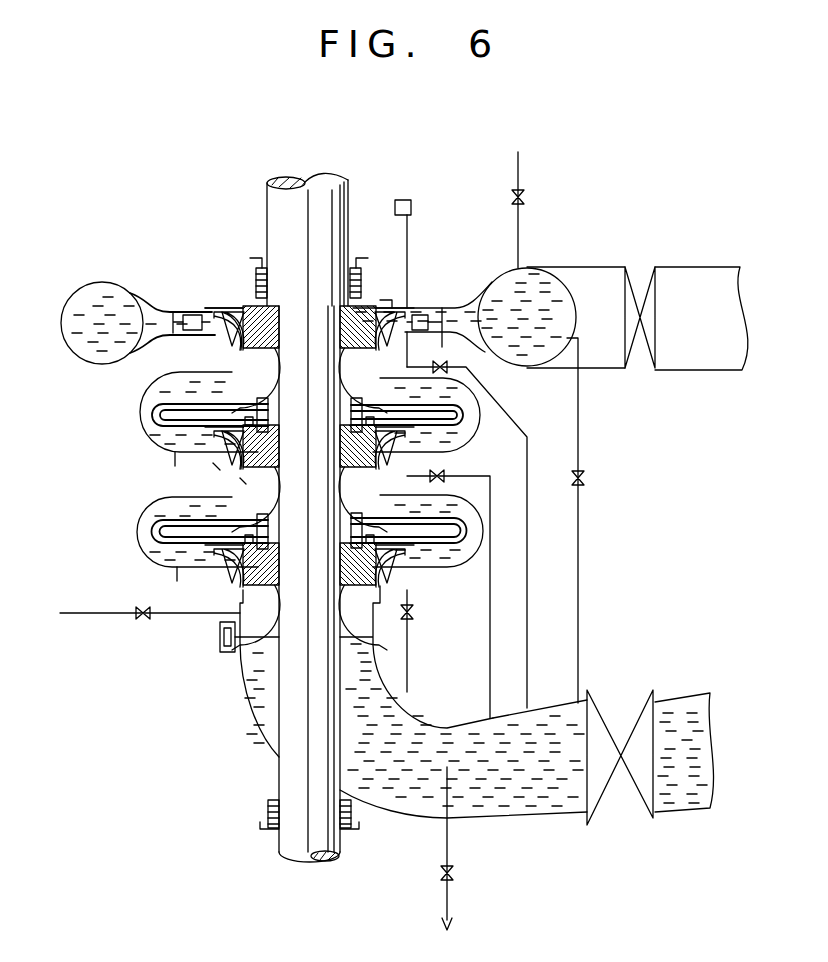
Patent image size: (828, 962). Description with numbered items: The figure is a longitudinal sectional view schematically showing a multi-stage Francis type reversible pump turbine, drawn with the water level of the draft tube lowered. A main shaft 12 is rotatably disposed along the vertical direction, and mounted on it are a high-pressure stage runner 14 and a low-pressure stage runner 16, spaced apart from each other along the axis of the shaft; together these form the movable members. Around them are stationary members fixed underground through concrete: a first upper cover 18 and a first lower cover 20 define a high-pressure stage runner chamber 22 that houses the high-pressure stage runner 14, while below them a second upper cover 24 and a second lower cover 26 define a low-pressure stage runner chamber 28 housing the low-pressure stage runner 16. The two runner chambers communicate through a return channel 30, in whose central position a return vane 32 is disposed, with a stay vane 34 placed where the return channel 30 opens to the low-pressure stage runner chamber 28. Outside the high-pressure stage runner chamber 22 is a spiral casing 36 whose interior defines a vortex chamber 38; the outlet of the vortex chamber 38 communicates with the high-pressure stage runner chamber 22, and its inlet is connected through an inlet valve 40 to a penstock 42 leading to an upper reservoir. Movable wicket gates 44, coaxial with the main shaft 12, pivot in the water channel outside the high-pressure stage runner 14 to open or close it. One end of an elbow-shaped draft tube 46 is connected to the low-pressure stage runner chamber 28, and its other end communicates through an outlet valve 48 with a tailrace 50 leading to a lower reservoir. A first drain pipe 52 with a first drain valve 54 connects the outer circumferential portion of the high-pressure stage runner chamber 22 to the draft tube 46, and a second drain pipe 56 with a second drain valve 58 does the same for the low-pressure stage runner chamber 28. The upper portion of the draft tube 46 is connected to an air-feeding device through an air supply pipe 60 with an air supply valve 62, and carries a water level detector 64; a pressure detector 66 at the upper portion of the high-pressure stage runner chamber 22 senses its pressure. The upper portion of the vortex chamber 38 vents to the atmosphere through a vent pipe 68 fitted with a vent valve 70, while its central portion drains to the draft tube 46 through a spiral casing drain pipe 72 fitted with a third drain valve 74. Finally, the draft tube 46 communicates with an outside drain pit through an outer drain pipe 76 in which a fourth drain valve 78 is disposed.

The main shaft 12 is at (343, 207).
The high-pressure stage runner 14 is at (390, 311).
The low-pressure stage runner 16 is at (226, 462).
The first upper cover 18 is at (218, 306).
The first lower cover 20 is at (212, 340).
The high-pressure stage runner chamber 22 is at (238, 348).
The second upper cover 24 is at (262, 418).
The second lower cover 26 is at (213, 464).
The low-pressure stage runner chamber 28 is at (243, 483).
The return channel 30 is at (156, 383).
The return vane 32 is at (143, 417).
The stay vane 34 is at (172, 456).
The spiral casing 36 is at (576, 303).
The vortex chamber 38 is at (546, 282).
The inlet valve 40 is at (630, 280).
The penstock 42 is at (700, 276).
The movable wicket gates 44 is at (426, 313).
The draft tube 46 is at (500, 806).
The outlet valve 48 is at (598, 706).
The tailrace 50 is at (682, 704).
The first drain pipe 52 is at (420, 349).
The first drain valve 54 is at (443, 362).
The second drain pipe 56 is at (490, 479).
The second drain valve 58 is at (447, 471).
The air supply pipe 60 is at (172, 613).
The air supply valve 62 is at (140, 610).
The water level detector 64 is at (220, 640).
The pressure detector 66 is at (411, 207).
The vent pipe 68 is at (520, 228).
The vent valve 70 is at (525, 196).
The spiral casing drain pipe 72 is at (580, 430).
The third drain valve 74 is at (585, 479).
The outer drain pipe 76 is at (446, 830).
The fourth drain valve 78 is at (440, 878).